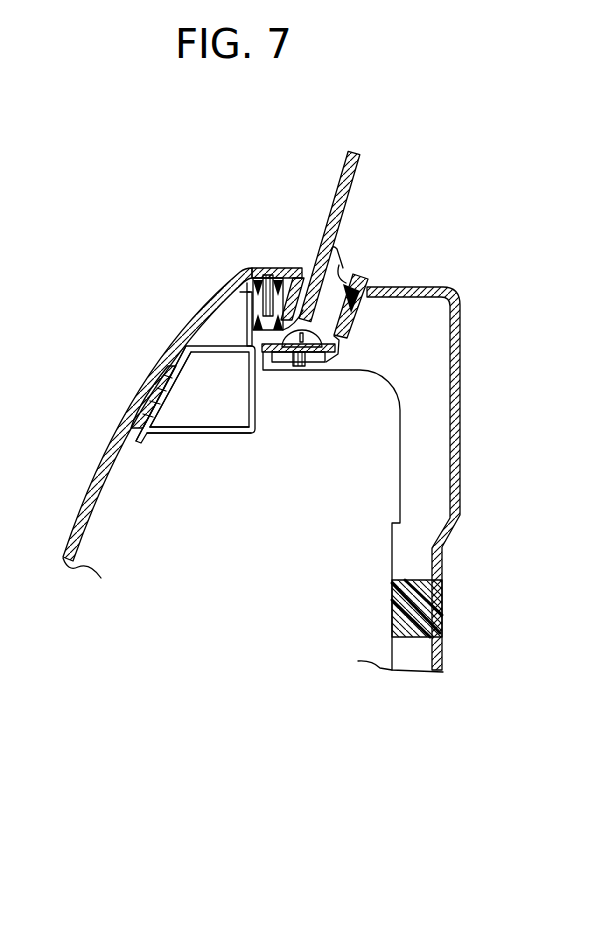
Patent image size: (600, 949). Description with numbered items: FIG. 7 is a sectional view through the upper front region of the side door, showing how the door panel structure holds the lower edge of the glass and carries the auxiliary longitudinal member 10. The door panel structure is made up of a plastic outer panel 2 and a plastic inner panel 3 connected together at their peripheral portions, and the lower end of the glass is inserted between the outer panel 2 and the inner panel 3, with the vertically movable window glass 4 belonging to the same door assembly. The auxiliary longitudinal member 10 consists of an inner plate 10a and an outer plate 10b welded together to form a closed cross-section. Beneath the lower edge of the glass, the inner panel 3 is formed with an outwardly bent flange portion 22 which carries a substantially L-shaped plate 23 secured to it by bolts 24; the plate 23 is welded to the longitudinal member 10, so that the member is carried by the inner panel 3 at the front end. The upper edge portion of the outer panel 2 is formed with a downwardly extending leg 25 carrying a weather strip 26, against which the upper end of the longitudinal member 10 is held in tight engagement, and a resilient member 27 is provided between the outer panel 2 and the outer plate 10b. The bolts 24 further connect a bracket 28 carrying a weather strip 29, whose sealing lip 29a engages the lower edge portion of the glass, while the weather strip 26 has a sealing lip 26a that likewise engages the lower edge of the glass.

The outer panel 2 is at (86, 502).
The inner panel 3 is at (460, 481).
The window glass 4 is at (343, 171).
The auxiliary longitudinal member 10 is at (231, 391).
The inner plate 10a is at (205, 434).
The outer plate 10b is at (203, 344).
The flange portion 22 is at (326, 363).
The L-shaped plate 23 is at (258, 365).
The bolts 24 is at (338, 344).
The downwardly extending leg 25 is at (278, 270).
The weather strip 26 is at (243, 266).
The sealing lip 26a is at (298, 300).
The resilient member 27 is at (152, 388).
The bracket 28 is at (344, 268).
The weather strip 29 is at (366, 277).
The sealing lip 29a is at (335, 249).